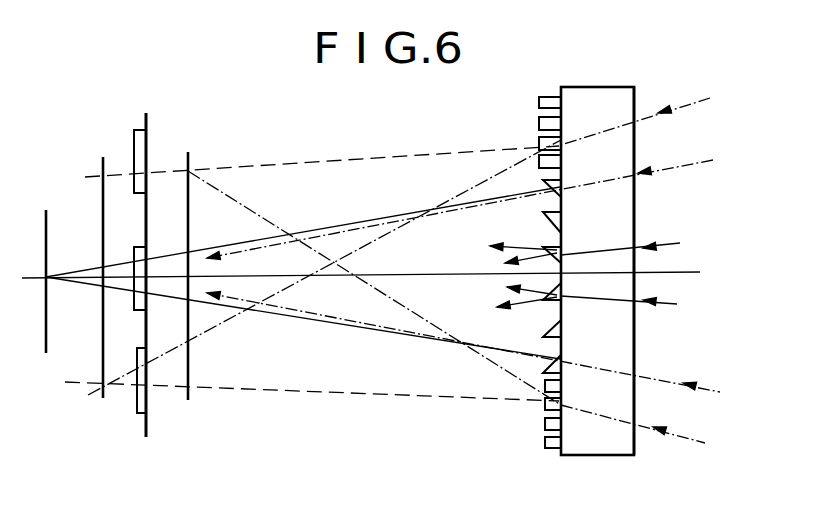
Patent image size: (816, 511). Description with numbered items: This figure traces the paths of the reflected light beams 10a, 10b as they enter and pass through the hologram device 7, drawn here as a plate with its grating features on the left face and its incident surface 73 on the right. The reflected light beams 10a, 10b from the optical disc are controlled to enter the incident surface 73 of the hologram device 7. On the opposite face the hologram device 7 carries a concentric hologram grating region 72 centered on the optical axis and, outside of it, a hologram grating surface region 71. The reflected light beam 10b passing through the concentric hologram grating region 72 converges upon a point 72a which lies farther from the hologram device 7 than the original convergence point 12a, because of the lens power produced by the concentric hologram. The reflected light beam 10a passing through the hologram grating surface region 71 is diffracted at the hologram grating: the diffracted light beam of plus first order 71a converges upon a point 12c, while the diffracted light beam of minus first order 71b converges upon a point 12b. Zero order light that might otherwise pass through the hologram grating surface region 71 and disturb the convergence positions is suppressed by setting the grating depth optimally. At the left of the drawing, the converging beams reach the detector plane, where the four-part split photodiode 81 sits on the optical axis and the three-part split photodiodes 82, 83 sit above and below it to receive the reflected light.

The hologram device 7 is at (602, 440).
The hologram grating surface region 71 is at (539, 125).
The diffracted light beam of plus first order 71a is at (360, 157).
The diffracted light beam of minus first order 71b is at (311, 393).
The concentric hologram grating region 72 is at (546, 327).
The convergence point 72a is at (45, 277).
The incident surface 73 is at (640, 333).
The reflected light beam 10a is at (675, 105).
The reflected light beam 10b is at (683, 169).
The original convergence point 12a is at (147, 277).
The convergence point 12b is at (103, 390).
The convergence point 12c is at (190, 170).
The four-part split photodiode 81 is at (135, 305).
The three-part split photodiode 82 is at (145, 118).
The three-part split photodiode 83 is at (138, 425).